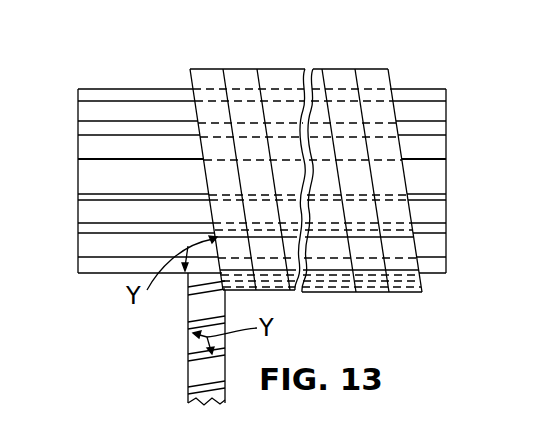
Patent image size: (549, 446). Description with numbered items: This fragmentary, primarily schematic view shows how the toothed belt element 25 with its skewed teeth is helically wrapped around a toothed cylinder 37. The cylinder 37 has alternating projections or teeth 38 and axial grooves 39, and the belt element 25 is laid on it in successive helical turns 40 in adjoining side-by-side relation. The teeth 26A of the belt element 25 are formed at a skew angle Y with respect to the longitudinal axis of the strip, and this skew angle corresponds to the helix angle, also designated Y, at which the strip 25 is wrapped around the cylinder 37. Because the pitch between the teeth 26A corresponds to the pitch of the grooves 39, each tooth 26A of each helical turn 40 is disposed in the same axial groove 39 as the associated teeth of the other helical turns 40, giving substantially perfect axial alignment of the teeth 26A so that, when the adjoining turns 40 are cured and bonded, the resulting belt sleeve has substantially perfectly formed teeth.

The toothed cylinder 37 is at (117, 89).
The teeth 38 is at (87, 172).
The grooves 39 is at (88, 142).
The helical turns 40 is at (277, 69).
The toothed belt element 25 is at (188, 349).
The skewed teeth 26A is at (197, 373).